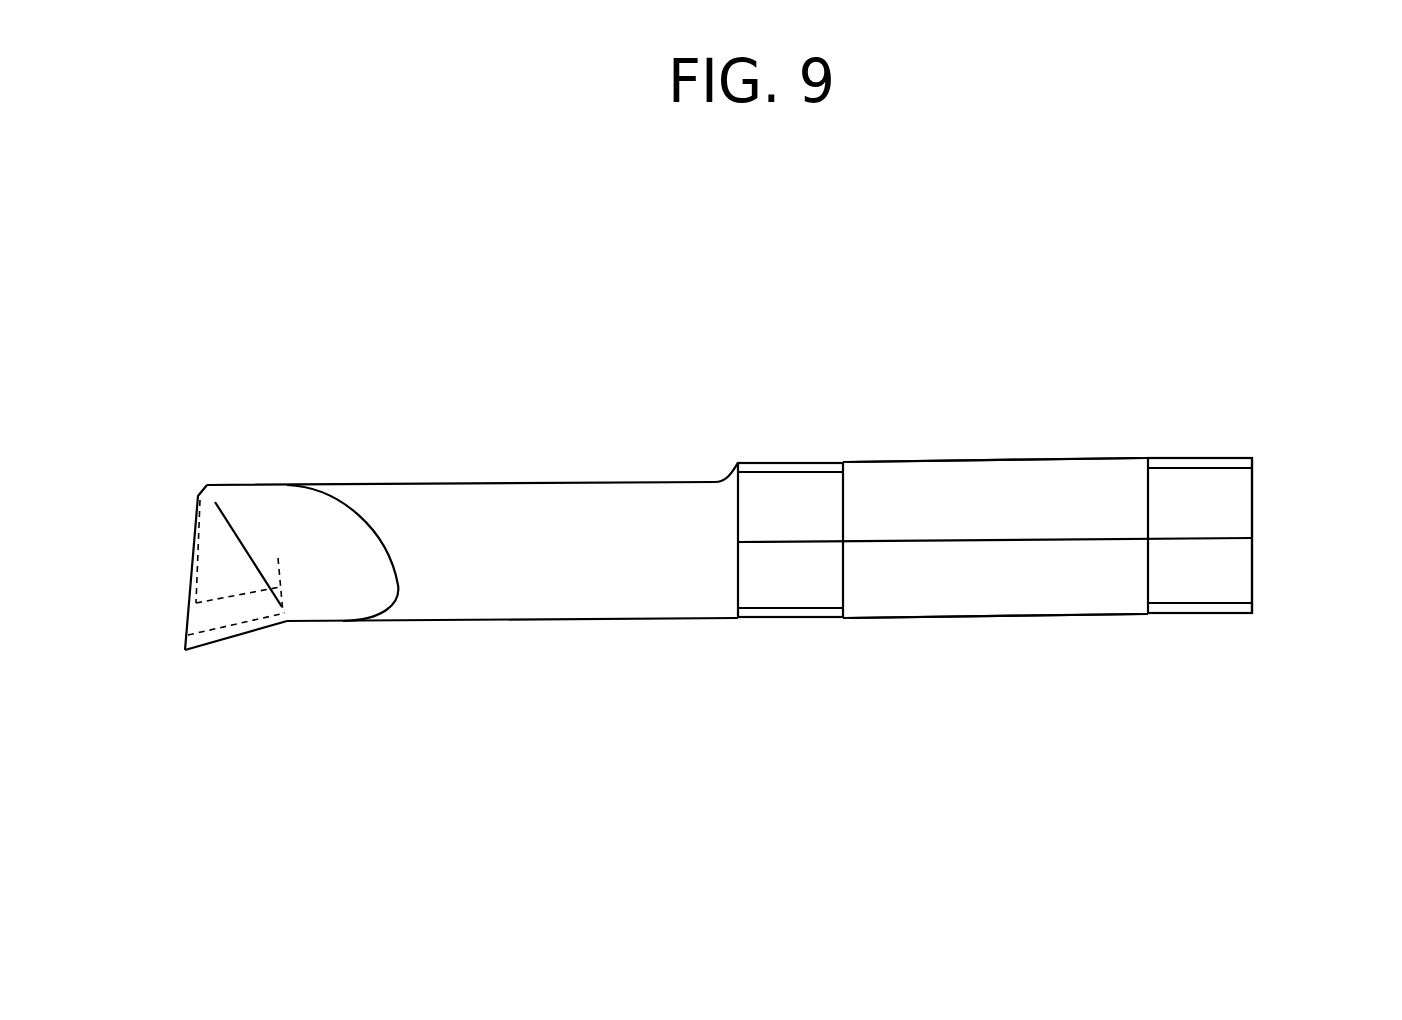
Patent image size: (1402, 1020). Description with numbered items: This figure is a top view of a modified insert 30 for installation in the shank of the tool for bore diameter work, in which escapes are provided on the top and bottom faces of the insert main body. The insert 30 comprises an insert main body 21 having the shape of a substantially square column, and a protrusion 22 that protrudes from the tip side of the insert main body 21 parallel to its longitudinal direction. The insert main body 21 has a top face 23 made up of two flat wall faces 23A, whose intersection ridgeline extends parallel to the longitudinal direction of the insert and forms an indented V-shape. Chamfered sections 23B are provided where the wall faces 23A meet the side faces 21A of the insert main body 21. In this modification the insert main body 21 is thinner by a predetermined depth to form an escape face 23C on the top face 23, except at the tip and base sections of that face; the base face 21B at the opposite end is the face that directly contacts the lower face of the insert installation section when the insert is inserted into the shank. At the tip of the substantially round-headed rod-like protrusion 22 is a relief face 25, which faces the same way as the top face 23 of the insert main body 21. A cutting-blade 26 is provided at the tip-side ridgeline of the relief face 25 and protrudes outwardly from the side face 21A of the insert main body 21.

The insert 30 is at (950, 311).
The insert main body 21 is at (902, 461).
The side face 21A is at (1017, 460).
The base face 21B is at (1252, 585).
The protrusion 22 is at (405, 478).
The top face 23 is at (762, 362).
The wall face 23A is at (757, 578).
The chamfered section 23B is at (800, 470).
The escape face 23C is at (1025, 523).
The relief face 25 is at (222, 563).
The cutting-blade 26 is at (185, 627).